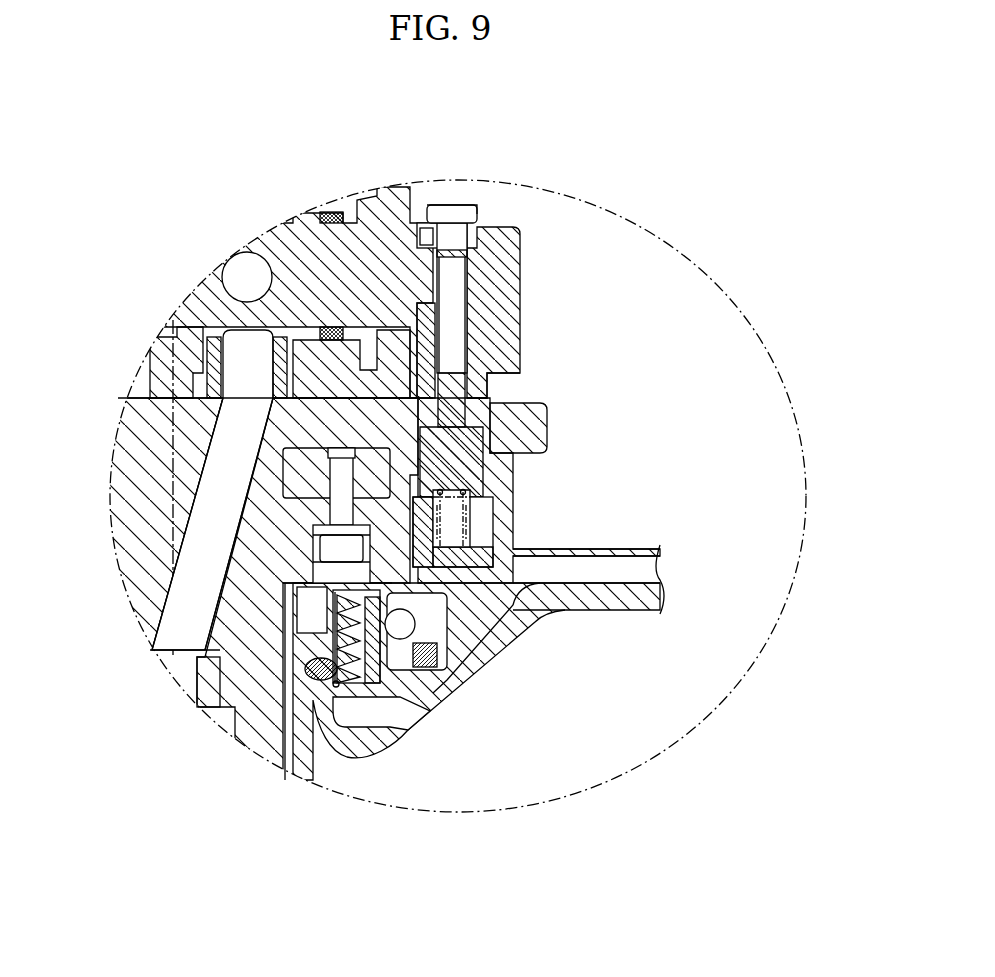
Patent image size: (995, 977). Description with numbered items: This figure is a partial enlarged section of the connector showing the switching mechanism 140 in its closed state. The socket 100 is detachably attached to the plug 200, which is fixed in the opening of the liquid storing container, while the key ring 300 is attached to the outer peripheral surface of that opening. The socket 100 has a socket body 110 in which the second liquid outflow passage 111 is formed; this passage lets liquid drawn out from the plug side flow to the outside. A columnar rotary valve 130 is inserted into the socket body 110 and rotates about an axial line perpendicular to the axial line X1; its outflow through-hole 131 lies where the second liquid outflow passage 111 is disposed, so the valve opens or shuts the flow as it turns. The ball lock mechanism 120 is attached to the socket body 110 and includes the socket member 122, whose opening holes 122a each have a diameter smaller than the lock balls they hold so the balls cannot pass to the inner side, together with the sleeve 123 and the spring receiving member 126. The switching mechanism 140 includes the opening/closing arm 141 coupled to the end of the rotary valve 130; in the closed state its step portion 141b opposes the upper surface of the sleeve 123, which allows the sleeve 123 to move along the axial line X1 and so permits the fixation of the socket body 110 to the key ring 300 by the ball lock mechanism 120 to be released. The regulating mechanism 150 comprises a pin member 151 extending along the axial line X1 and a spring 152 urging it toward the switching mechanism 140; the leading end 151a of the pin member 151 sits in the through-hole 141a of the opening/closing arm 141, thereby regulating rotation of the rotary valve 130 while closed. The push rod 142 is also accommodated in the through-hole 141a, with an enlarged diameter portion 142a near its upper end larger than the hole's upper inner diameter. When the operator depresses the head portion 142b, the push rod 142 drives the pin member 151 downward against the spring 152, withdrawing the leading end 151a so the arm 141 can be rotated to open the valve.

The socket 100 is at (605, 236).
The socket body 110 is at (135, 485).
The second liquid outflow passage 111 is at (205, 450).
The axial line X1 is at (165, 540).
The ball lock mechanism 120 is at (660, 425).
The socket member 122 is at (392, 585).
The opening hole 122a is at (410, 611).
The sleeve 123 is at (547, 421).
The spring receiving member 126 is at (443, 580).
The rotary valve 130 is at (415, 223).
The outflow through-hole 131 is at (226, 282).
The switching mechanism 140 is at (607, 308).
The opening/closing arm 141 is at (520, 335).
The through-hole 141a is at (462, 282).
The step portion 141b is at (508, 374).
The push rod 142 is at (462, 205).
The enlarged diameter portion 142a is at (467, 253).
The head portion 142b is at (477, 215).
The regulating mechanism 150 is at (588, 453).
The pin member 151 is at (483, 478).
The leading end 151a is at (438, 382).
The spring 152 is at (468, 490).
The plug 200 is at (308, 772).
The key ring 300 is at (407, 687).